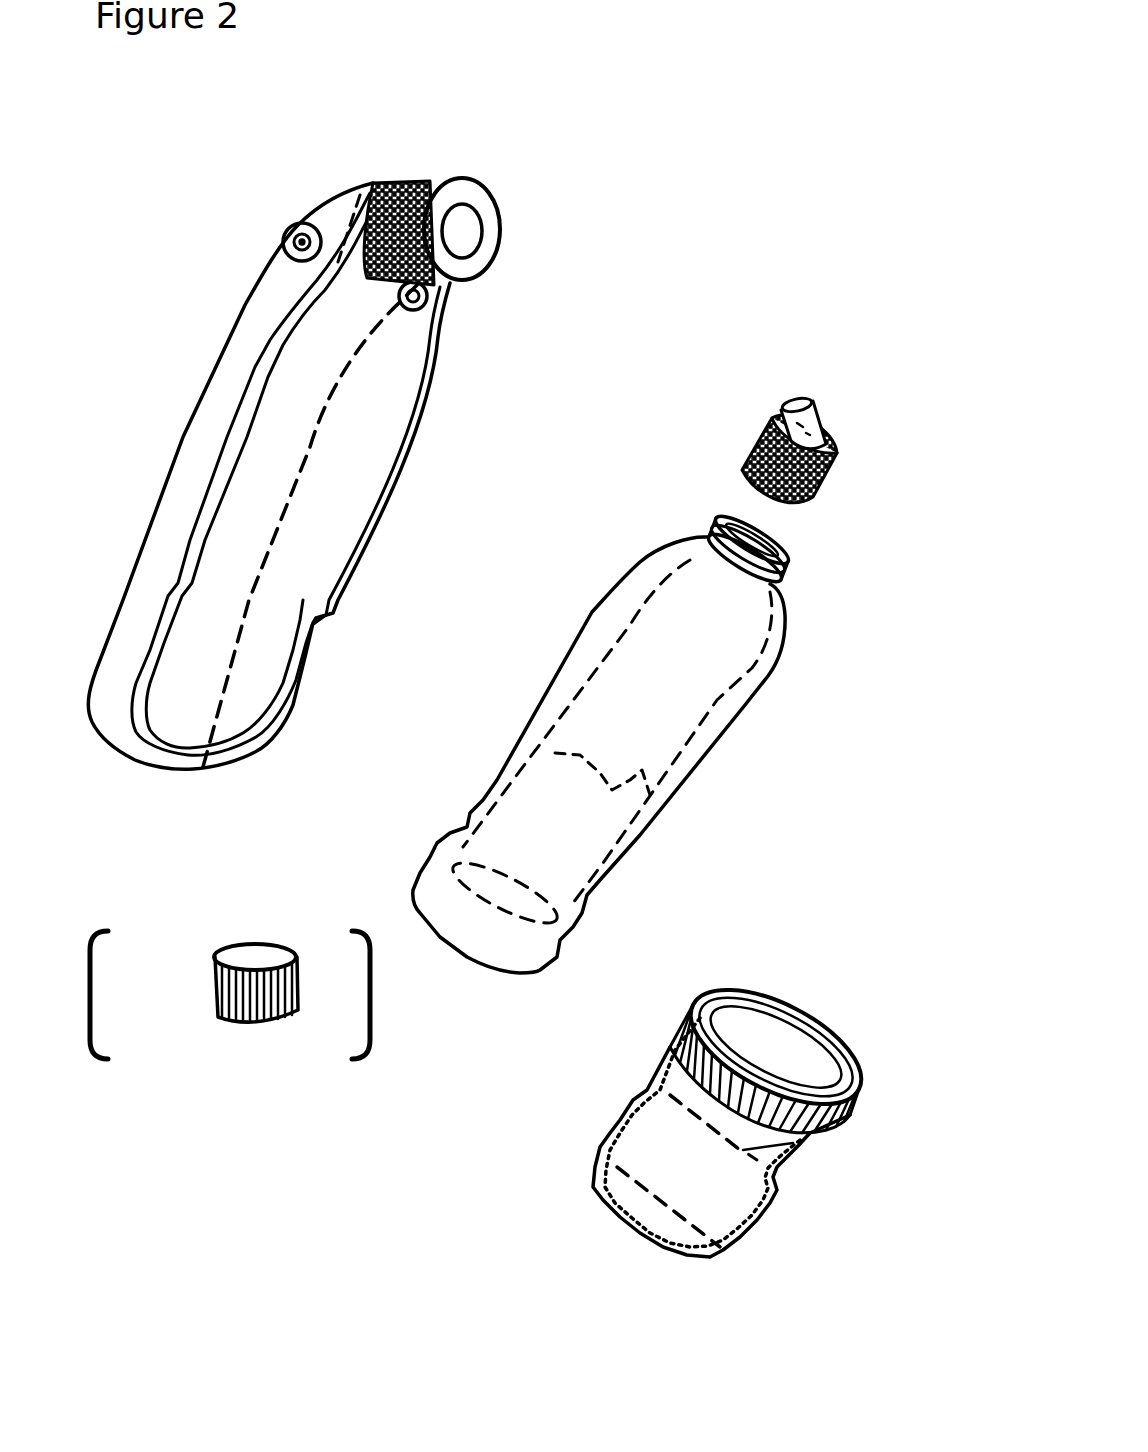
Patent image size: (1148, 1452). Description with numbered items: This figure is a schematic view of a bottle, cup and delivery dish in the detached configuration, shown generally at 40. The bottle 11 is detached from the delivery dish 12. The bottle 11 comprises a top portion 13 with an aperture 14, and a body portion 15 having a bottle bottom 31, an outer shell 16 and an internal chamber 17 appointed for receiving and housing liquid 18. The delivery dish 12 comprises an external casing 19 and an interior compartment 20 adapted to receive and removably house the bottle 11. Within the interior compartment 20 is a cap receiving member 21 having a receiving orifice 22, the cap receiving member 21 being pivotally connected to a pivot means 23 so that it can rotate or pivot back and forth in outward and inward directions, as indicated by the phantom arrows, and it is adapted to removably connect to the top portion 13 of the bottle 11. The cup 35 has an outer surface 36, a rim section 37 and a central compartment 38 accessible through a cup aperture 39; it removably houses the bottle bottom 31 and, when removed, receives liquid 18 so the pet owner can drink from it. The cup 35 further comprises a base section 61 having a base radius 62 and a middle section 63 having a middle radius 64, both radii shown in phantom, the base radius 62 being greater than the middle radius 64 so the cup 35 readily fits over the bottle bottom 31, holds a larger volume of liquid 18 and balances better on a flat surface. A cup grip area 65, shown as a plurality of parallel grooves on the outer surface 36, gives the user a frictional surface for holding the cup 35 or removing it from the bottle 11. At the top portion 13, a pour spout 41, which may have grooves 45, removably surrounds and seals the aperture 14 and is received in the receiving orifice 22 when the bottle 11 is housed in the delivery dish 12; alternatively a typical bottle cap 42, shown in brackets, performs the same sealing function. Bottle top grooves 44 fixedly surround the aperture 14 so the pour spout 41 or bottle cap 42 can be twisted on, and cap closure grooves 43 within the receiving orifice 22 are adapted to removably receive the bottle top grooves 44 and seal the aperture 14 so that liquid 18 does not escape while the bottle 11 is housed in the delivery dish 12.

The bottle 11 is at (785, 683).
The delivery dish 12 is at (232, 315).
The top portion 13 is at (697, 540).
The aperture 14 is at (768, 532).
The body portion 15 is at (510, 747).
The outer shell 16 is at (573, 680).
The internal chamber 17 is at (628, 630).
The liquid 18 is at (612, 786).
The external casing 19 is at (158, 515).
The interior compartment 20 is at (357, 452).
The cap receiving member 21 is at (440, 180).
The receiving orifice 22 is at (465, 232).
The pivot means 23 is at (300, 240).
The bottle bottom 31 is at (433, 857).
The cup 35 is at (598, 1124).
The outer surface 36 is at (737, 1197).
The rim section 37 is at (710, 998).
The central compartment 38 is at (800, 1060).
The cup aperture 39 is at (773, 1027).
The detached configuration 40 is at (806, 193).
The pour spout 41 is at (837, 456).
The bottle cap 42 is at (217, 987).
The cap closure grooves 43 is at (410, 181).
The bottle top grooves 44 is at (706, 530).
The grooves 45 is at (758, 438).
The base section 61 is at (603, 1208).
The base radius 62 is at (697, 1213).
The middle section 63 is at (675, 1068).
The middle radius 64 is at (785, 1150).
The cup grip area 65 is at (800, 1143).